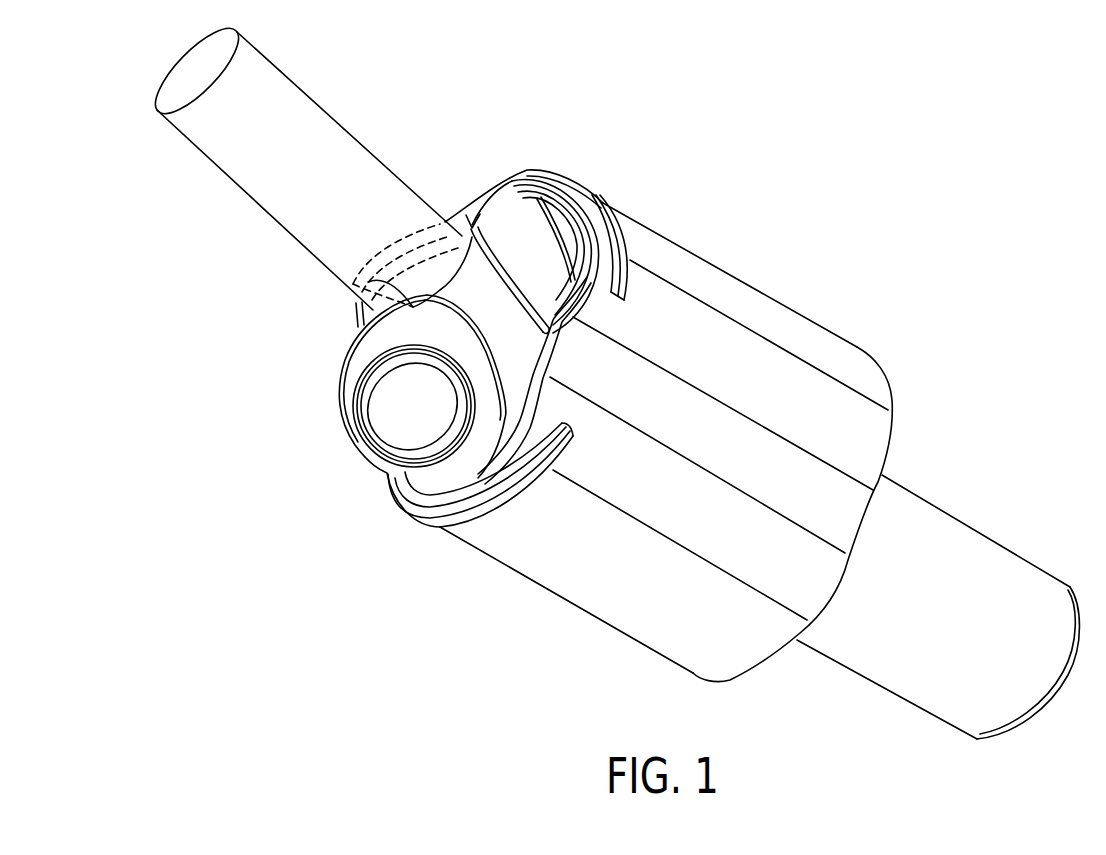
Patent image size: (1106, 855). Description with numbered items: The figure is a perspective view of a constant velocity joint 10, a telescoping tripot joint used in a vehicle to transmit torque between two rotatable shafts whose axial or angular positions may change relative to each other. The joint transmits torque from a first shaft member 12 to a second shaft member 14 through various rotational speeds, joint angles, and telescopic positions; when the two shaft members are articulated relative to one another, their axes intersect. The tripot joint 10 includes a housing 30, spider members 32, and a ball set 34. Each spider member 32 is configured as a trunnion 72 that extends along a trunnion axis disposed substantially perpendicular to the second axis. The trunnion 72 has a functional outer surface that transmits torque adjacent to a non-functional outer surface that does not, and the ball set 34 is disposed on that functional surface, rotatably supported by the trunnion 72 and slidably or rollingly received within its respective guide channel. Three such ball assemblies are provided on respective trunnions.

The constant velocity joint 10 is at (443, 126).
The first shaft member 12 is at (230, 152).
The second shaft member 14 is at (957, 542).
The housing 30 is at (684, 270).
The spider member 32 is at (463, 293).
The ball set 34 is at (322, 424).
The trunnion 72 is at (403, 432).